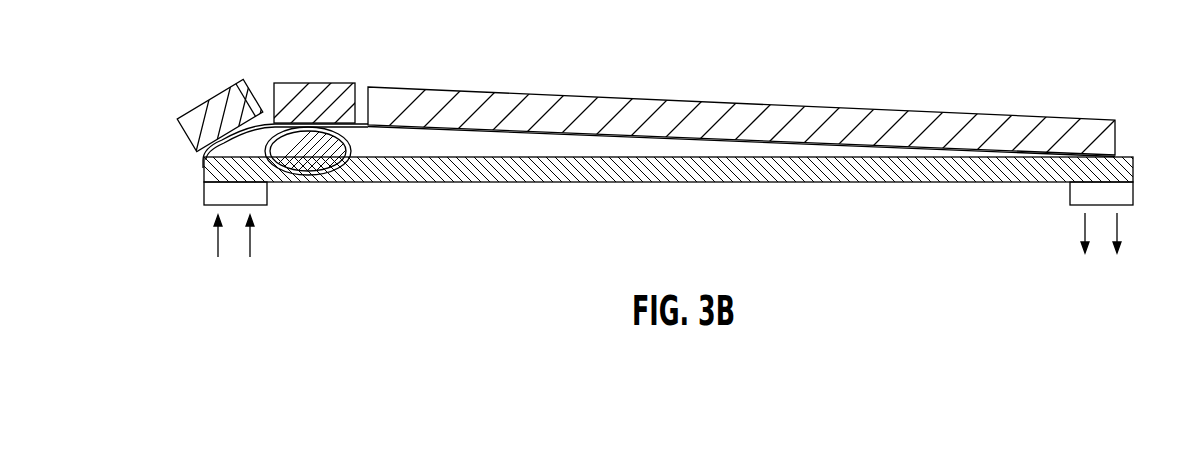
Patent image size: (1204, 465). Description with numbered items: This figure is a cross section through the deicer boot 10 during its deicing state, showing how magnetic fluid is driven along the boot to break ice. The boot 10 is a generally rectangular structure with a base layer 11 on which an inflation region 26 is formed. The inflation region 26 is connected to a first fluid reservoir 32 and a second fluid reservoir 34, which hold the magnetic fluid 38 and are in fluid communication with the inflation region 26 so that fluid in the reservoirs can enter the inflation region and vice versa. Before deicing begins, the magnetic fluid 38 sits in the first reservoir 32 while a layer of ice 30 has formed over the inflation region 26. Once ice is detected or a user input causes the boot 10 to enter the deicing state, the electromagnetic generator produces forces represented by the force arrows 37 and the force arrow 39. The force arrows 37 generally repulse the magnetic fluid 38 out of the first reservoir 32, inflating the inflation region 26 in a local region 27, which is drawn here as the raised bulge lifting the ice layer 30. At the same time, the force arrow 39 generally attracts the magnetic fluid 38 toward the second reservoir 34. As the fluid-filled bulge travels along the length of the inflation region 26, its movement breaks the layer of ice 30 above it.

The deicer boot 10 is at (535, 42).
The base layer 11 is at (553, 184).
The inflation region 26 is at (242, 80).
The local region 27 is at (320, 62).
The layer of ice 30 is at (722, 122).
The first fluid reservoir 32 is at (204, 192).
The second fluid reservoir 34 is at (1133, 190).
The force arrows 37 is at (215, 238).
The magnetic fluid 38 is at (308, 178).
The force arrow 39 is at (1118, 235).